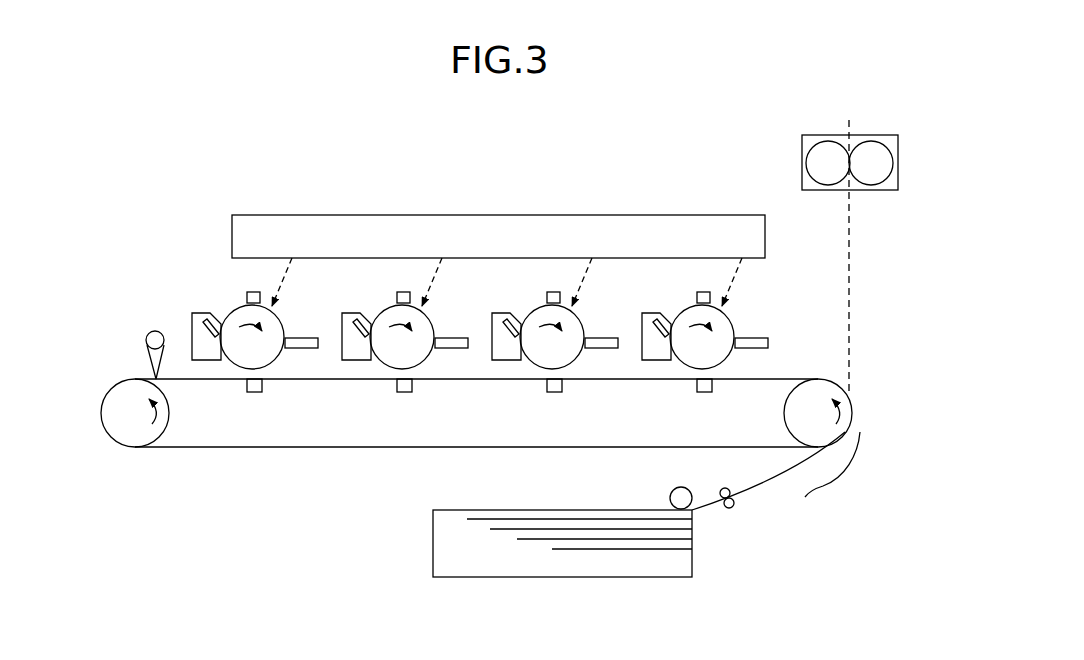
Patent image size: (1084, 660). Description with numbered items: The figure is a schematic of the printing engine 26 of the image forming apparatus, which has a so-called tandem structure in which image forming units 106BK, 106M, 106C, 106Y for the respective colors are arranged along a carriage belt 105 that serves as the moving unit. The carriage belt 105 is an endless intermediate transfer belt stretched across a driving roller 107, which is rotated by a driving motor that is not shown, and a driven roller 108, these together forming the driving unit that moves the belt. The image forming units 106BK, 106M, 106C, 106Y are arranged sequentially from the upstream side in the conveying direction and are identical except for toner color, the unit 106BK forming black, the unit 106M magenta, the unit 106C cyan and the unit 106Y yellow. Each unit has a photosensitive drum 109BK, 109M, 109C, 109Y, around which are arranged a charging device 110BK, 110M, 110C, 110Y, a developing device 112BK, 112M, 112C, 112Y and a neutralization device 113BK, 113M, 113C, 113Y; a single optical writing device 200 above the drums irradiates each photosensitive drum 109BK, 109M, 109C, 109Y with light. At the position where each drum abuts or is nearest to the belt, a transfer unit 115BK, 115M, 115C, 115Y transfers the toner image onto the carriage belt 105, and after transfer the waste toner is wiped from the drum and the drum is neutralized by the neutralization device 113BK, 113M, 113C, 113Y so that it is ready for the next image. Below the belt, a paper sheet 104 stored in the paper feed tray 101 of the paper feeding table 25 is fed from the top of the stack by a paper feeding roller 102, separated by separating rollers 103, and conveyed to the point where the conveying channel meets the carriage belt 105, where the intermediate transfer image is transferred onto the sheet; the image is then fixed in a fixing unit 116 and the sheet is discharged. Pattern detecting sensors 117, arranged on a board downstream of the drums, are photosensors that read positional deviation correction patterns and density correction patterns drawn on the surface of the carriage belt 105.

The printing engine 26 is at (152, 190).
The optical writing device 200 is at (766, 217).
The image forming unit 106Y is at (297, 285).
The image forming unit 106C is at (447, 285).
The image forming unit 106M is at (597, 285).
The image forming unit 106BK is at (742, 288).
The photosensitive drum 109Y is at (278, 356).
The photosensitive drum 109C is at (428, 356).
The photosensitive drum 109M is at (578, 356).
The photosensitive drum 109BK is at (728, 356).
The charging device 110Y is at (253, 292).
The charging device 110C is at (403, 292).
The charging device 110M is at (553, 292).
The charging device 110BK is at (703, 292).
The developing device 112Y is at (305, 338).
The developing device 112C is at (455, 338).
The developing device 112M is at (605, 338).
The developing device 112BK is at (755, 338).
The neutralization device 113Y is at (195, 313).
The neutralization device 113C is at (345, 313).
The neutralization device 113M is at (495, 313).
The neutralization device 113BK is at (645, 313).
The transfer unit 115Y is at (255, 393).
The transfer unit 115C is at (405, 393).
The transfer unit 115M is at (555, 393).
The transfer unit 115BK is at (705, 393).
The carriage belt 105 is at (352, 447).
The driving roller 107 is at (113, 438).
The driven roller 108 is at (790, 437).
The pattern detecting sensor 117 is at (147, 330).
The fixing unit 116 is at (893, 135).
The paper feed tray 101 is at (437, 509).
The paper sheet 104 is at (543, 508).
The paper feeding roller 102 is at (670, 491).
The separating rollers 103 is at (733, 507).
The paper feeding table 25 is at (420, 578).